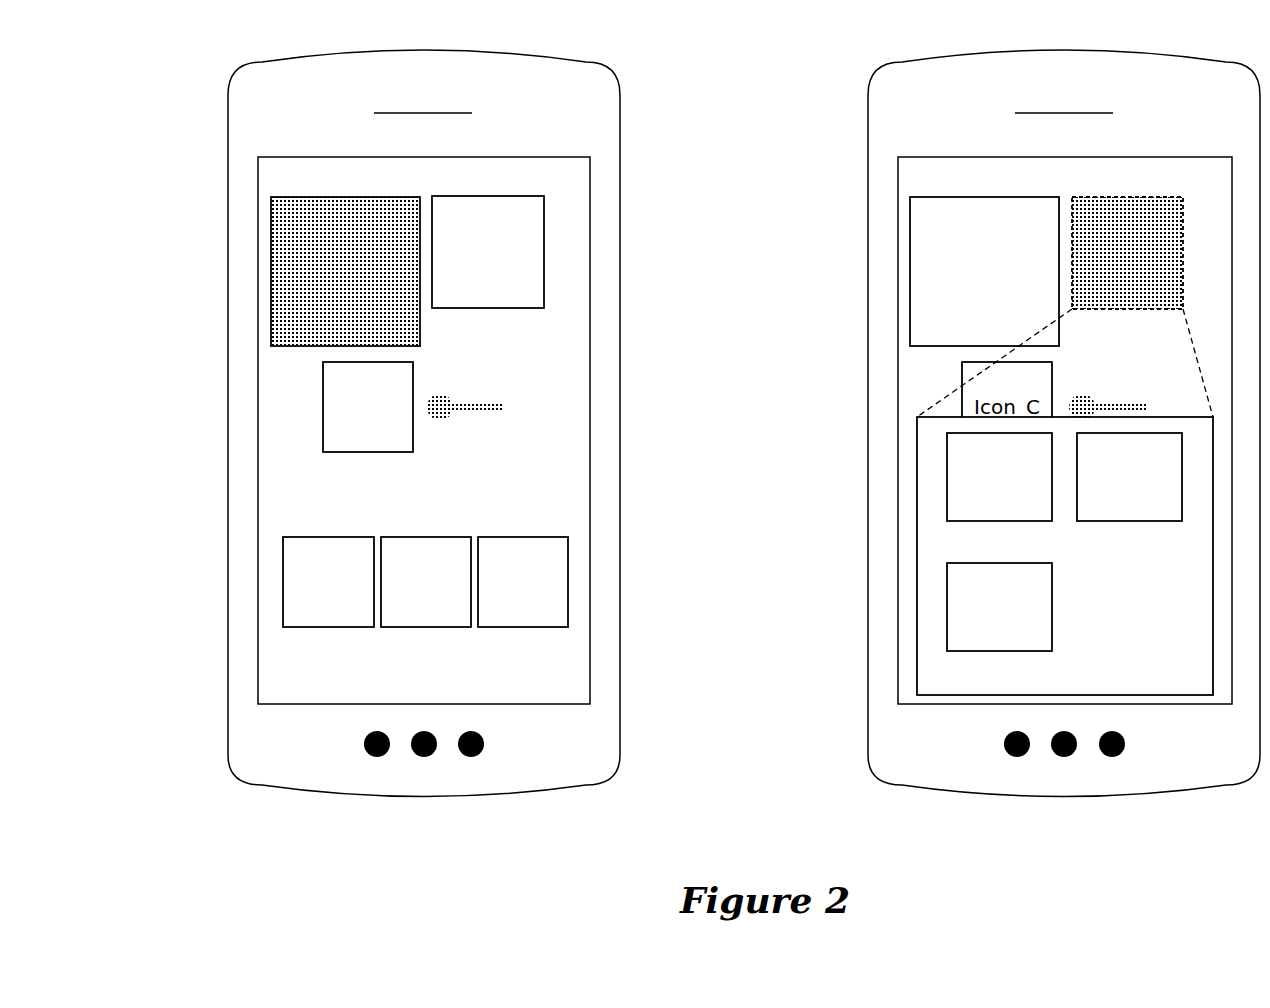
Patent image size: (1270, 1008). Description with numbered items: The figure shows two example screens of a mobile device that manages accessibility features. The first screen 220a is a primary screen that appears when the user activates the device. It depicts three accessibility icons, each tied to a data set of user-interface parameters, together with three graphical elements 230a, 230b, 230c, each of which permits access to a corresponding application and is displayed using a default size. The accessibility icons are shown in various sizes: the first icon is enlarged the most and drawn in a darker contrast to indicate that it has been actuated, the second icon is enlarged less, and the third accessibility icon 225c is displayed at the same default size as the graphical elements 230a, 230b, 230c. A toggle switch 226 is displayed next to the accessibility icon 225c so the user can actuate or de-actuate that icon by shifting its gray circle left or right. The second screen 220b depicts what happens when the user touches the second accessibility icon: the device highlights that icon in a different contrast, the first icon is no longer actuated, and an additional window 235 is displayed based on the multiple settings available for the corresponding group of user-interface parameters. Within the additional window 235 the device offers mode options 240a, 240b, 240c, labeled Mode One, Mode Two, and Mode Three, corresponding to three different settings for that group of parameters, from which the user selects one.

The screen 220a is at (258, 213).
The screen 220b is at (898, 213).
The accessibility icon 225c is at (350, 452).
The toggle switch 226 is at (470, 400).
The graphical element 230a is at (313, 627).
The graphical element 230b is at (411, 627).
The graphical element 230c is at (505, 627).
The additional window 235 is at (917, 480).
The mode option 1 240a is at (975, 521).
The mode option 2 240b is at (1104, 521).
The mode option 3 240c is at (975, 651).